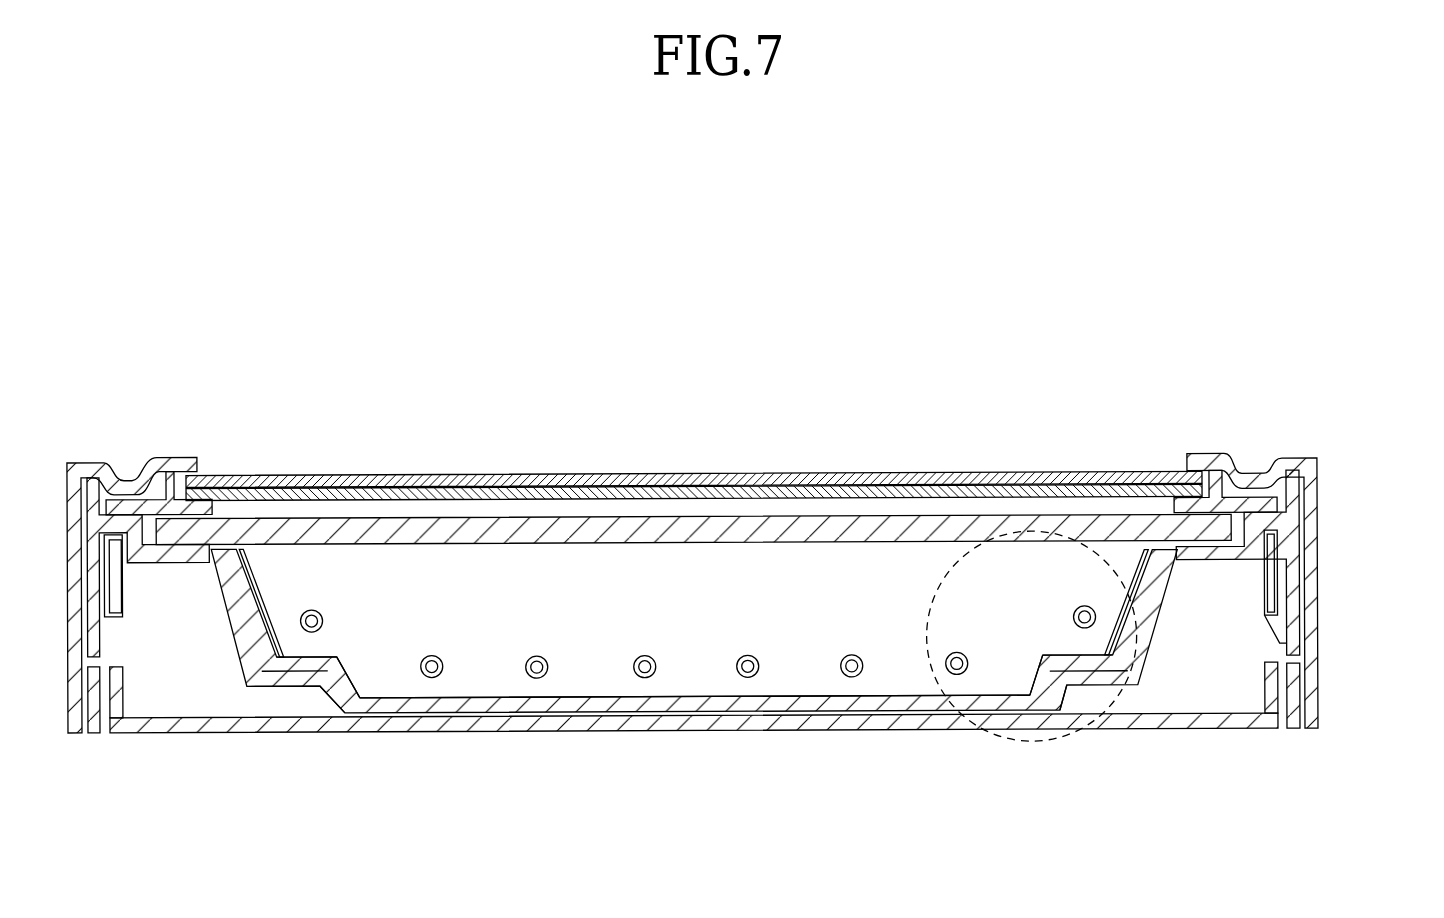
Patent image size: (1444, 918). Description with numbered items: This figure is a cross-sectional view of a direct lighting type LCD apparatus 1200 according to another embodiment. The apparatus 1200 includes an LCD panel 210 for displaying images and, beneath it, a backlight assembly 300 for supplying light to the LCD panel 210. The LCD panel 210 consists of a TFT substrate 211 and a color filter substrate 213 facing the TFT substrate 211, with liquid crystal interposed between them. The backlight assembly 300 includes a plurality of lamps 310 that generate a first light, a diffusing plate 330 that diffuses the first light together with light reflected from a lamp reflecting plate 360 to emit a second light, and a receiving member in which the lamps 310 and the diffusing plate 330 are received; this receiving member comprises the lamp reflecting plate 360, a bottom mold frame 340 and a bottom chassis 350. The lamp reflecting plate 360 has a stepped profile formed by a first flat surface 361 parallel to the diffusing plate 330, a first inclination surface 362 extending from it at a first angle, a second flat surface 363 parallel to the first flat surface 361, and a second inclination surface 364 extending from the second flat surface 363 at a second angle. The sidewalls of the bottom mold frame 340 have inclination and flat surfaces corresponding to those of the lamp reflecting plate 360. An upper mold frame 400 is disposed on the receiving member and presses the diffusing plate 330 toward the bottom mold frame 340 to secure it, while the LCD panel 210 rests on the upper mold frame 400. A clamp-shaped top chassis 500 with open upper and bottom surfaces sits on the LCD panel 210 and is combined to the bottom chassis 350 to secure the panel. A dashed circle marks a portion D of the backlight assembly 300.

The direct lighting LCD apparatus 1200 is at (727, 276).
The LCD panel 210 is at (693, 416).
The TFT substrate 211 is at (612, 480).
The color filter substrate 213 is at (602, 386).
The top chassis 500 is at (1295, 462).
The upper mold frame 400 is at (1280, 508).
The bottom mold frame 340 is at (1280, 534).
The backlight assembly 300 is at (693, 677).
The diffusing plate 330 is at (565, 548).
The lamps 310 is at (647, 681).
The lamp reflecting plate 360 is at (695, 672).
The first flat surface 361 is at (482, 699).
The first inclination surface 362 is at (345, 690).
The second flat surface 363 is at (283, 674).
The second inclination surface 364 is at (229, 600).
The bottom chassis 350 is at (545, 790).
The detail region D is at (1000, 742).